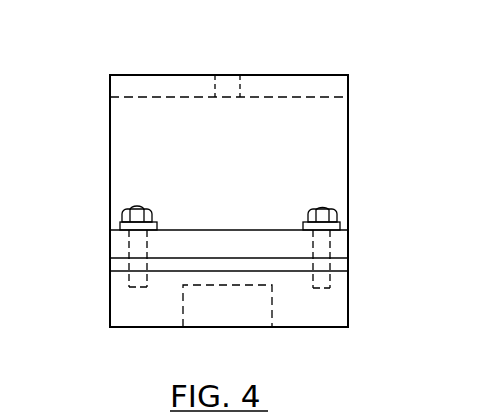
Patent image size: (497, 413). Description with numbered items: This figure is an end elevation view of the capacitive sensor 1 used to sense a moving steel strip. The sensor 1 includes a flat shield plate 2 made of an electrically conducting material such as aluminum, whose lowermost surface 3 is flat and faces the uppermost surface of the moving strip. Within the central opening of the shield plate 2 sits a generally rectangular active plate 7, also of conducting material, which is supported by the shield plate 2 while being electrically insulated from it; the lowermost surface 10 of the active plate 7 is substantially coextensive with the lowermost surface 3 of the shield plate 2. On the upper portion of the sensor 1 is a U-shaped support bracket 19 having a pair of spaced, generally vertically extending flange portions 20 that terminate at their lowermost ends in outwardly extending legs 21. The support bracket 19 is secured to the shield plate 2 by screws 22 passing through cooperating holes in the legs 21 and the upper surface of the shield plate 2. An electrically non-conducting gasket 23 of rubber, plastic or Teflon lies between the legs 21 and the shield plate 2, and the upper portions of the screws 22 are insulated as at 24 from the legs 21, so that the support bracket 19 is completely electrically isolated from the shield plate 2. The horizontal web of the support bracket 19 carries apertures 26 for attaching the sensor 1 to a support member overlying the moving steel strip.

The sensor 1 is at (148, 52).
The shield plate 2 is at (110, 311).
The lowermost surface 3 is at (348, 327).
The active plate 7 is at (272, 305).
The lowermost surface 10 is at (235, 328).
The support bracket 19 is at (118, 140).
The flange portions 20 is at (120, 178).
The legs 21 is at (251, 230).
The screws 22 is at (140, 210).
The gasket 23 is at (115, 262).
The insulation 24 is at (157, 224).
The apertures 26 is at (218, 94).